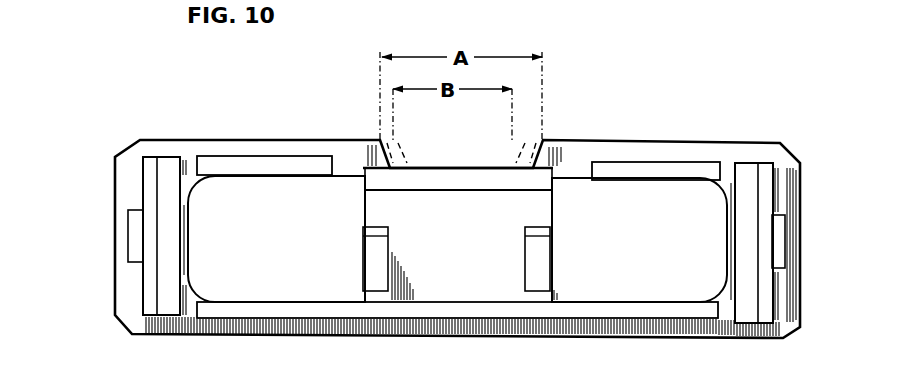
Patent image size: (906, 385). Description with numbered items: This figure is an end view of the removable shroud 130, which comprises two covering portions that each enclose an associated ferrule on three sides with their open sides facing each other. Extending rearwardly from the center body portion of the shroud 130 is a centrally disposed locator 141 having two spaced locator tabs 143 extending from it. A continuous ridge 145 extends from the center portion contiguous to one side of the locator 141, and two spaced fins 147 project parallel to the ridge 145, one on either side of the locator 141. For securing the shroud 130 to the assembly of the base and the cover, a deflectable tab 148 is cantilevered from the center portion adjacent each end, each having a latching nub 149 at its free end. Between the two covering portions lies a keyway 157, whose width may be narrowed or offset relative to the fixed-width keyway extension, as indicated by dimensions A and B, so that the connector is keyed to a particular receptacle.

The shroud 130 is at (318, 376).
The locator 141 is at (412, 300).
The locator tabs 143 is at (370, 247).
The ridge 145 is at (490, 310).
The fins 147 is at (270, 157).
The deflectable tab 148 is at (147, 283).
The latching nub 149 is at (135, 237).
The keyway 157 is at (467, 163).